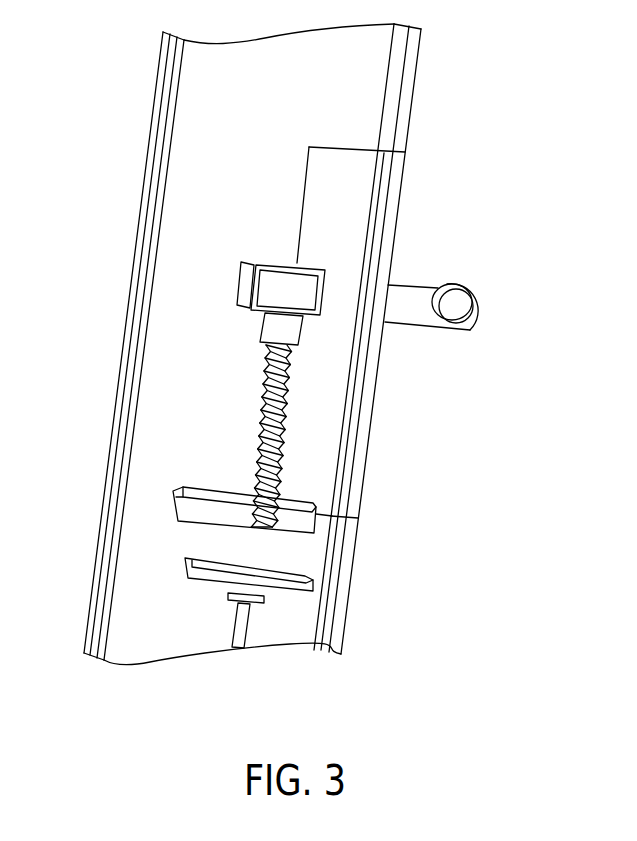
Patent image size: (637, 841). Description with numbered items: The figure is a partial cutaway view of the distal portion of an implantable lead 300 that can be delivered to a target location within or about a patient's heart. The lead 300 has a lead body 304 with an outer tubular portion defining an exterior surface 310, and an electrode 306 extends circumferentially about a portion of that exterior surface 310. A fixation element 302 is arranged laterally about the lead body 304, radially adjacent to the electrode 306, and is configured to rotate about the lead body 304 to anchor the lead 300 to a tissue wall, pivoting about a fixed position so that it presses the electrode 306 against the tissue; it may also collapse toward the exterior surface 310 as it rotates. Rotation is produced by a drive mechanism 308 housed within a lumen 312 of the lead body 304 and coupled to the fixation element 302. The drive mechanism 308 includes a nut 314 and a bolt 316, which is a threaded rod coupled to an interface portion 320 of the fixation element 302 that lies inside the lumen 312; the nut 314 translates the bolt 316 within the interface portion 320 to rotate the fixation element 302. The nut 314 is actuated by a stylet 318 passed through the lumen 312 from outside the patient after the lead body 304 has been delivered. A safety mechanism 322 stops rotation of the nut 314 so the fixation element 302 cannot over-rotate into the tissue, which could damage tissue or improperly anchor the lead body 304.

The lead 300 is at (118, 80).
The fixation element 302 is at (485, 308).
The lead body 304 is at (90, 609).
The electrode 306 is at (367, 410).
The drive mechanism 308 is at (303, 553).
The exterior surface 310 is at (128, 338).
The lumen 312 is at (295, 628).
The nut 314 is at (183, 568).
The bolt 316 is at (258, 441).
The stylet 318 is at (233, 638).
The interface portion 320 is at (232, 240).
The safety mechanism 322 is at (183, 498).